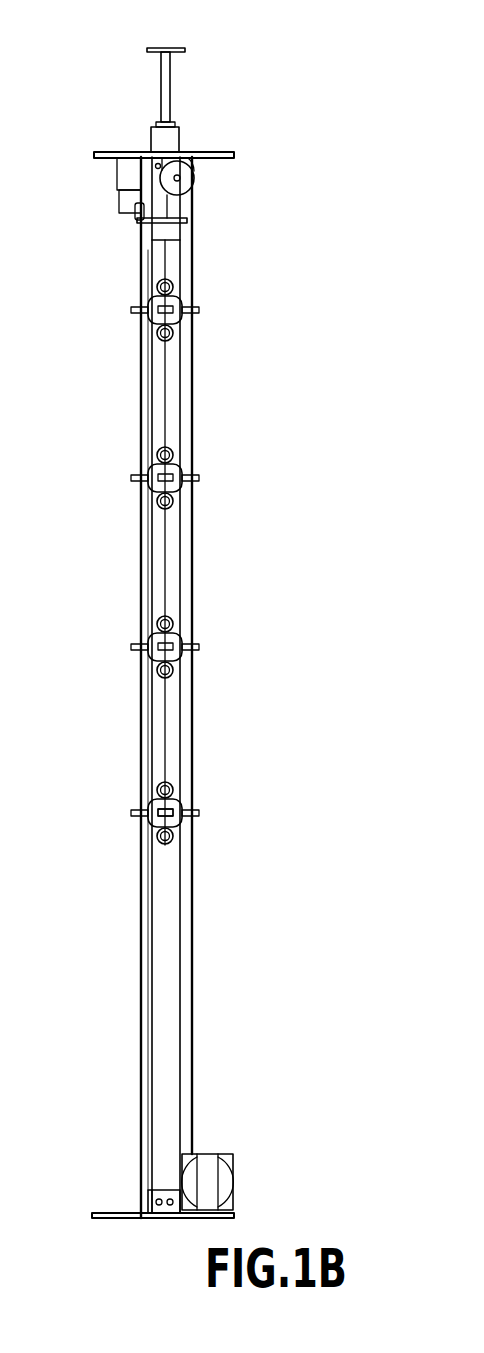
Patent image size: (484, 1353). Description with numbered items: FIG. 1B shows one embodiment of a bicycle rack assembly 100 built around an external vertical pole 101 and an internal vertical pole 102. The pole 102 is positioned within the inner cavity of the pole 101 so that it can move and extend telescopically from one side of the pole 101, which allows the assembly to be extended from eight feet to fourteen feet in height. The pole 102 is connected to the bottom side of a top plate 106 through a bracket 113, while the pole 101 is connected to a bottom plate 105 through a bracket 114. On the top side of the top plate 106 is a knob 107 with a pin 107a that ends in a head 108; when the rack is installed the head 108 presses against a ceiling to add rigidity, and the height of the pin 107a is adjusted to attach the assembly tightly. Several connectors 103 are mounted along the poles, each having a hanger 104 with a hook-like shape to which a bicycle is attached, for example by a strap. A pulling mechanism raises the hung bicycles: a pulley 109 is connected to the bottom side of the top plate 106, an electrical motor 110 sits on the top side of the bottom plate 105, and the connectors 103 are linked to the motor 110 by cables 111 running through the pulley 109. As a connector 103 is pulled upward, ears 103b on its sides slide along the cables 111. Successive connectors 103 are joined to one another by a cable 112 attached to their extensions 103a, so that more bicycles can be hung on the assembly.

The lift system 100 is at (300, 323).
The external vertical pole 101 is at (182, 530).
The internal vertical pole 102 is at (181, 210).
The connector 103 is at (175, 635).
The extension 103a is at (168, 784).
The ear 103b is at (186, 813).
The hanger 104 is at (157, 805).
The bottom plate 105 is at (110, 1213).
The top plate 106 is at (227, 153).
The knob 107 is at (172, 72).
The pin 107a is at (166, 99).
The head 108 is at (177, 46).
The pulley 109 is at (197, 177).
The electrical motor 110 is at (228, 1160).
The cable 111 is at (146, 375).
The cable 112 is at (166, 408).
The bracket 113 is at (136, 219).
The bracket 114 is at (140, 1216).